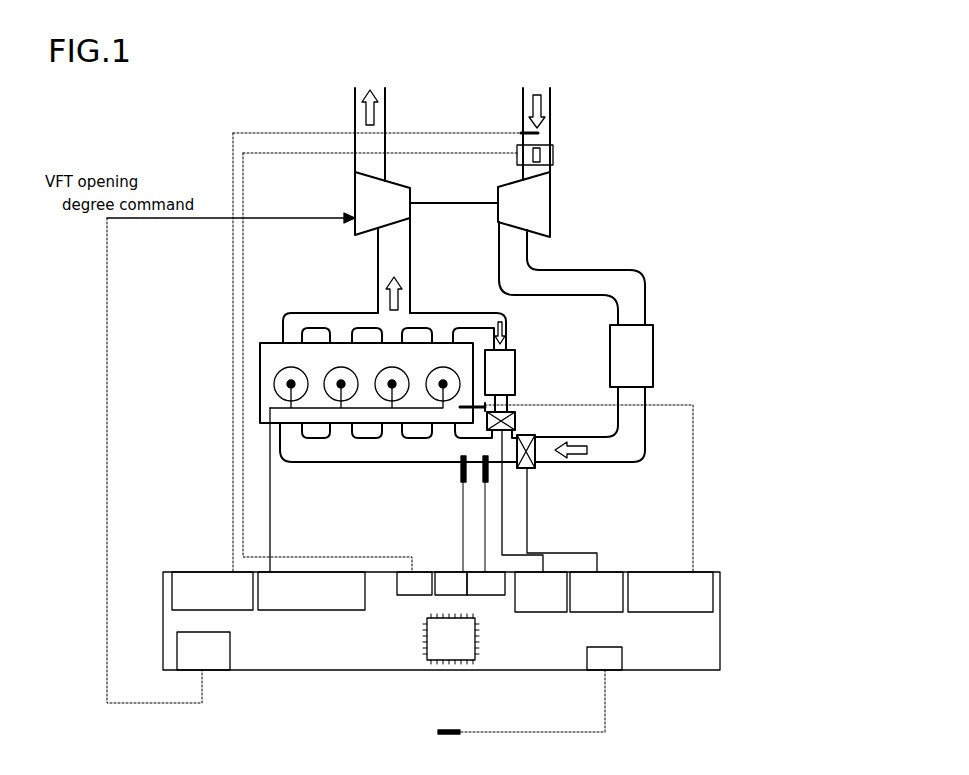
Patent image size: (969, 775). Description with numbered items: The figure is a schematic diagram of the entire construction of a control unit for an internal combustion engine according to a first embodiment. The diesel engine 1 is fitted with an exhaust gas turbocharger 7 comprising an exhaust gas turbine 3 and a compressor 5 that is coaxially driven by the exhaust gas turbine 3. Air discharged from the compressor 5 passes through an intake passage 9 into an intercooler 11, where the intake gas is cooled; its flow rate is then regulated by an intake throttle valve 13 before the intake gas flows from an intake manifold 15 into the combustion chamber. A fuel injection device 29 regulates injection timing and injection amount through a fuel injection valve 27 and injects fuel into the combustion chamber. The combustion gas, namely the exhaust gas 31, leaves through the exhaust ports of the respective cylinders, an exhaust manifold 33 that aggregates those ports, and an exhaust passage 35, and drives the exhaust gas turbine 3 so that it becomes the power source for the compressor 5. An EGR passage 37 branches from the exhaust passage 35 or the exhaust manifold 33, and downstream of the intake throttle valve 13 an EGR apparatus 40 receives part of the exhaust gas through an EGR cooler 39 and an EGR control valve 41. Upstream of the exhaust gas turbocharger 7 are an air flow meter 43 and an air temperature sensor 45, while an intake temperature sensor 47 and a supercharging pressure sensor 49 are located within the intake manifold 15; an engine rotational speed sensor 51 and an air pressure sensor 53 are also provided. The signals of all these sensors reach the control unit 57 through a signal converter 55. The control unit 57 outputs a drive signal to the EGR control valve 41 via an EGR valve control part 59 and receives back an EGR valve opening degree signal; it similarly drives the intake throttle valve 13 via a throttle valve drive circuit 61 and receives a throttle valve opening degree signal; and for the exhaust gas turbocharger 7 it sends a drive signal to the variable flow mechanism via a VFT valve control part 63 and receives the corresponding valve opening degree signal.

The diesel engine 1 is at (500, 315).
The exhaust gas turbine 3 is at (355, 180).
The compressor 5 is at (562, 218).
The exhaust gas turbocharger 7 is at (461, 173).
The intake passage 9 is at (647, 292).
The intercooler 11 is at (653, 355).
The intake throttle valve 13 is at (527, 469).
The intake manifold 15 is at (312, 464).
The fuel injection valve 27 is at (287, 378).
The fuel injection device 29 is at (300, 612).
The exhaust gas 31 is at (410, 297).
The exhaust manifold 33 is at (314, 313).
The exhaust passage 35 is at (378, 256).
The EGR passage 37 is at (507, 326).
The EGR cooler 39 is at (516, 361).
The EGR apparatus 40 is at (655, 436).
The EGR control valve 41 is at (655, 475).
The air flow meter 43 is at (553, 155).
The air temperature sensor 45 is at (538, 134).
The intake temperature sensor 47 is at (460, 468).
The supercharging pressure sensor 49 is at (482, 478).
The engine rotational speed sensor 51 is at (505, 412).
The air pressure sensor 53 is at (440, 730).
The signal converter 55 is at (172, 588).
The control unit 57 is at (722, 607).
The EGR valve control part 59 is at (553, 568).
The throttle valve drive circuit 61 is at (600, 568).
The VFT valve control part 63 is at (218, 672).